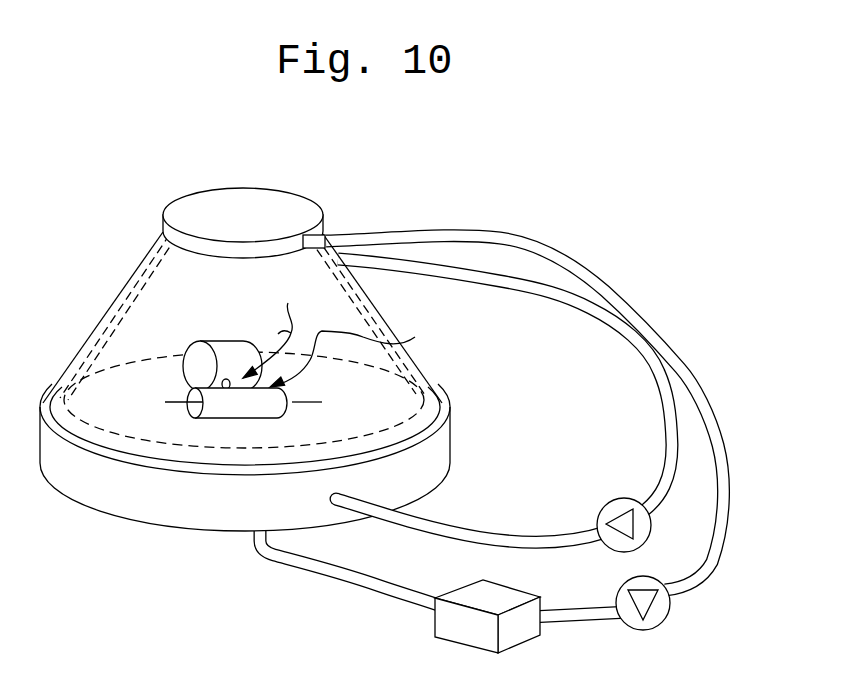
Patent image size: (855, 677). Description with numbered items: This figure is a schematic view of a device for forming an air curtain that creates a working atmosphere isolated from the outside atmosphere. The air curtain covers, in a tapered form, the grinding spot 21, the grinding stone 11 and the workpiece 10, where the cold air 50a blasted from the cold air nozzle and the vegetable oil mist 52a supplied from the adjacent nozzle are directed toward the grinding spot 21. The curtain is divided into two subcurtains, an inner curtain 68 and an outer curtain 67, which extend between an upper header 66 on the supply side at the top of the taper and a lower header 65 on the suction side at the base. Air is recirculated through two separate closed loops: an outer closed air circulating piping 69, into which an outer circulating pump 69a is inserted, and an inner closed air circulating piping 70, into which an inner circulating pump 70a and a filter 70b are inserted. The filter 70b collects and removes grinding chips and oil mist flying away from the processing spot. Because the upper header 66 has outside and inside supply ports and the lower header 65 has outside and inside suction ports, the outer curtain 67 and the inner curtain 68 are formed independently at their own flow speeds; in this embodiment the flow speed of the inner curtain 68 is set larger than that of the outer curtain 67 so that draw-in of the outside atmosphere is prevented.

The workpiece 10 is at (250, 419).
The grinding stone 11 is at (197, 343).
The grinding spot 21 is at (227, 389).
The cold air 50a is at (275, 329).
The vegetable oil mist 52a is at (368, 355).
The lower header 65 is at (73, 483).
The upper header 66 is at (200, 190).
The outer curtain 67 is at (143, 267).
The inner curtain 68 is at (110, 322).
The outer closed air circulating piping 69 is at (668, 376).
The outer circulating pump 69a is at (620, 502).
The inner closed air circulating piping 70 is at (714, 418).
The inner circulating pump 70a is at (670, 604).
The filter 70b is at (527, 641).